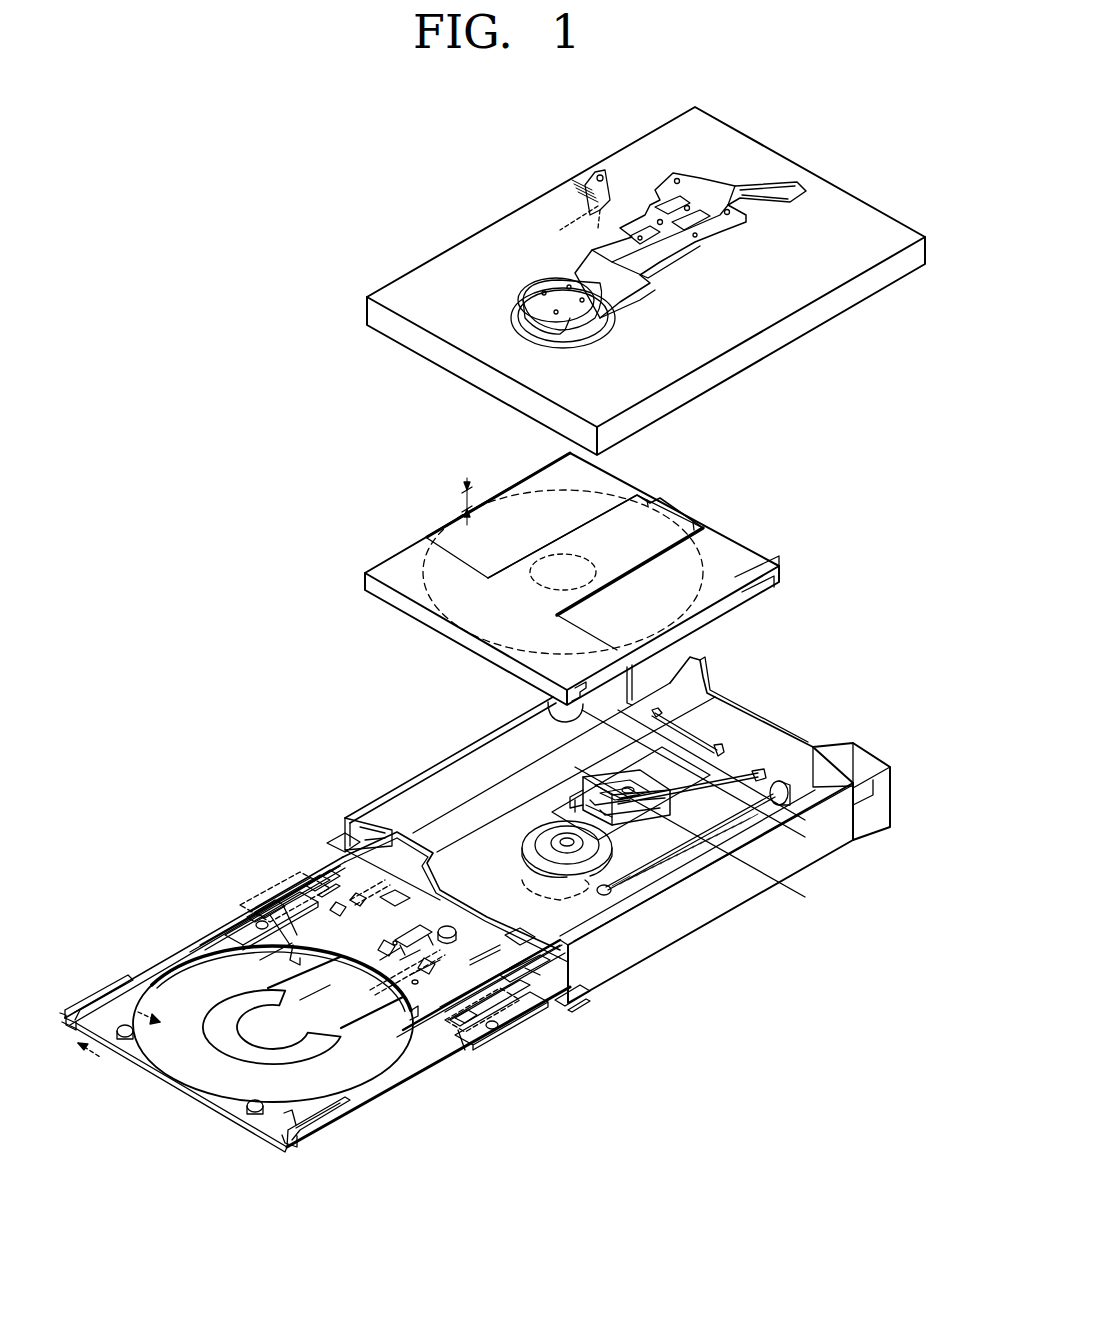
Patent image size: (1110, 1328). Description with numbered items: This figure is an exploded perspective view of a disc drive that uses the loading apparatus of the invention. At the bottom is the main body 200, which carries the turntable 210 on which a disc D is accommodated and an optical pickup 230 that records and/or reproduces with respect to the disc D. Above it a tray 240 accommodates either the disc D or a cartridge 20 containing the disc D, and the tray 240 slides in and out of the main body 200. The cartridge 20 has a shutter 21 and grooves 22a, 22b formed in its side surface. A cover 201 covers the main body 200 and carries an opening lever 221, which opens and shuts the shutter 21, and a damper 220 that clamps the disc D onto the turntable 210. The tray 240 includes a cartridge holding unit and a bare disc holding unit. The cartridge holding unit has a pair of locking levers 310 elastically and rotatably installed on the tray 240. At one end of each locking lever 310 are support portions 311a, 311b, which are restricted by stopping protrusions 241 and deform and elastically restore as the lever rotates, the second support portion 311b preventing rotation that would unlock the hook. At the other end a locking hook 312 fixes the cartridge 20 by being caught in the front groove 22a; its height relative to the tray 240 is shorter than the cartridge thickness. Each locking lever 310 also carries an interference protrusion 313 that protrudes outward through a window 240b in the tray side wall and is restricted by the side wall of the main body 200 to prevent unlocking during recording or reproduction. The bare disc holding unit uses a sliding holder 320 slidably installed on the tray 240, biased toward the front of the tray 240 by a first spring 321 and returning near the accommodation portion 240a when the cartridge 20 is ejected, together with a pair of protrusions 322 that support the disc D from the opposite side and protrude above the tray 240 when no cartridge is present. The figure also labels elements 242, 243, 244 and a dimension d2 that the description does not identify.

The cartridge 20 is at (584, 587).
The shutter 21 is at (678, 502).
The front groove 22a is at (765, 594).
The groove 22b is at (550, 708).
The disc D is at (707, 557).
The gap between shutter and cartridge edge d2 is at (454, 501).
The main body 200 is at (747, 937).
The cover 201 is at (453, 257).
The turntable 210 is at (565, 835).
The damper 220 is at (560, 293).
The opening lever 221 is at (590, 177).
The optical pickup 230 is at (677, 773).
The tray 240 is at (397, 970).
The accommodation portion 240a is at (185, 980).
The window 240b is at (313, 867).
The stopping protrusions 241 is at (607, 977).
The guide protrusion 242 is at (380, 847).
The guide member 243 is at (77, 1007).
The center hub opening 244 is at (284, 930).
The locking lever 310 is at (307, 863).
The support portion 311a is at (333, 870).
The second support portion 311b is at (390, 827).
The locking hook 312 is at (265, 905).
The interference protrusion 313 is at (250, 905).
The sliding holder 320 is at (398, 1013).
The first spring 321 is at (456, 935).
The protrusions 322 is at (125, 1040).